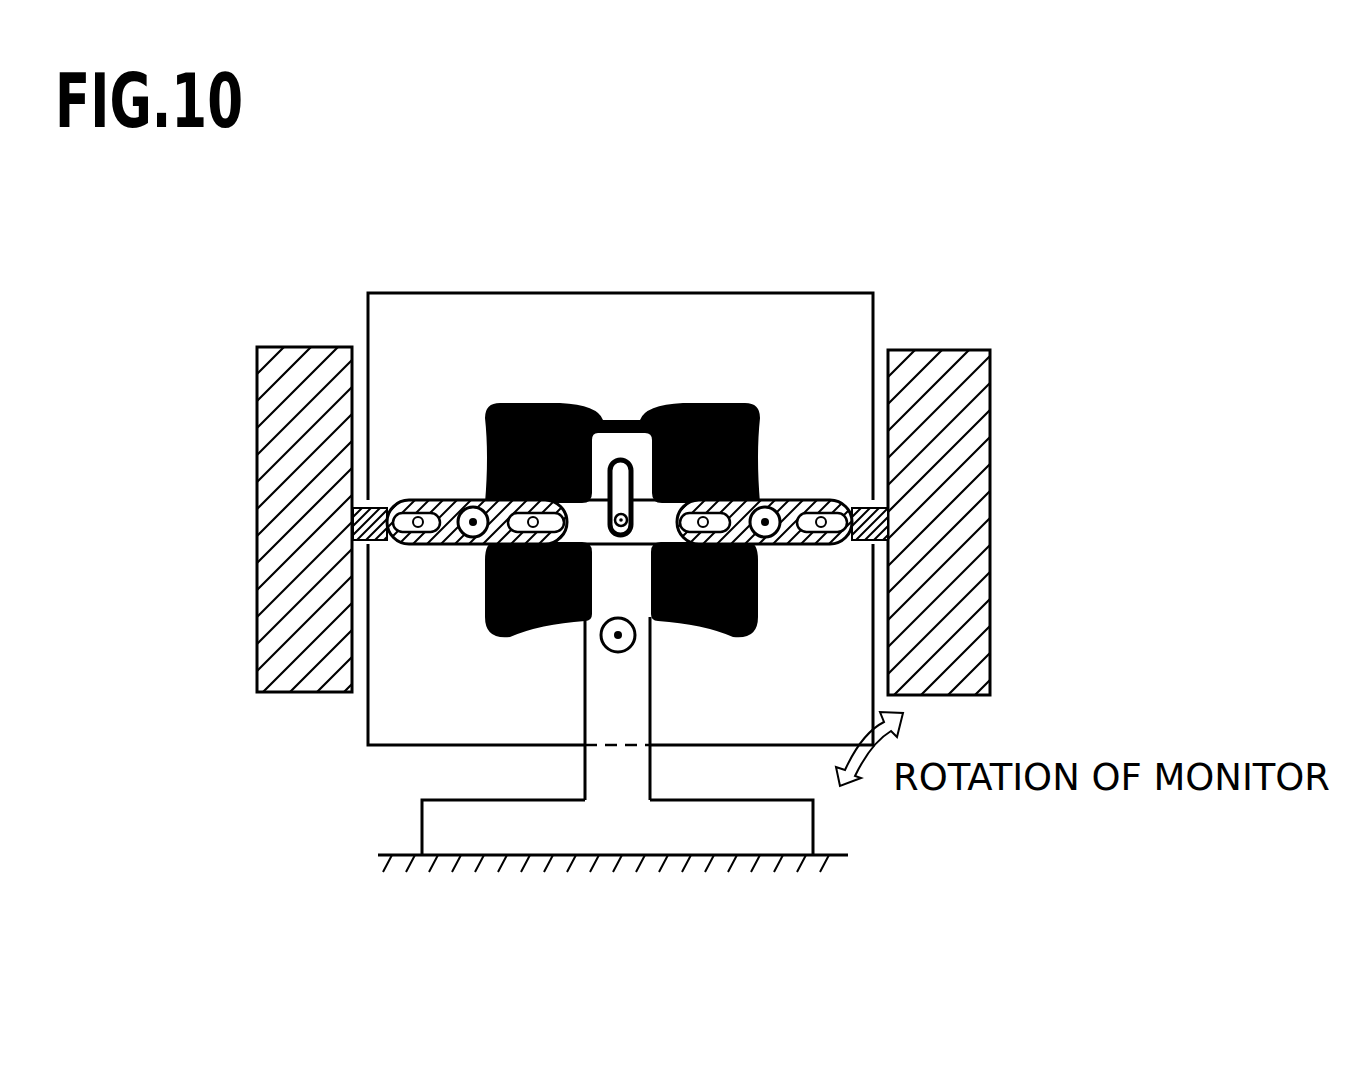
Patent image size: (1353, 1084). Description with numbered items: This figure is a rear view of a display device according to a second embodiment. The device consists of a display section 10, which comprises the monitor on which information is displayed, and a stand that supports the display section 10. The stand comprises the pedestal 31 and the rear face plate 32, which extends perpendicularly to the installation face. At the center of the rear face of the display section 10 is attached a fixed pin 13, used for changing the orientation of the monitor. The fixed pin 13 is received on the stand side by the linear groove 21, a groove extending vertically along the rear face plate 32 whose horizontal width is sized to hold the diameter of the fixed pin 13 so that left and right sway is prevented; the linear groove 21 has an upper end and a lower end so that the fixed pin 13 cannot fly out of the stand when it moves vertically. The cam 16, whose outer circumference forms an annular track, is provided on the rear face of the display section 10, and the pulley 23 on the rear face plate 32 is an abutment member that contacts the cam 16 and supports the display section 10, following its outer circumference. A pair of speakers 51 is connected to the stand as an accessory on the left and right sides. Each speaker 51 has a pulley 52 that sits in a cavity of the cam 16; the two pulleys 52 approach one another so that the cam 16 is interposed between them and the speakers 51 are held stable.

The display section 10 is at (827, 320).
The fixed pin 13 is at (645, 423).
The cam 16 is at (533, 403).
The linear groove 21 is at (616, 458).
The pulley 23 is at (601, 640).
The pedestal 31 is at (797, 830).
The rear face plate 32 is at (620, 707).
The speaker 51 is at (980, 435).
The pulley 52 is at (471, 508).